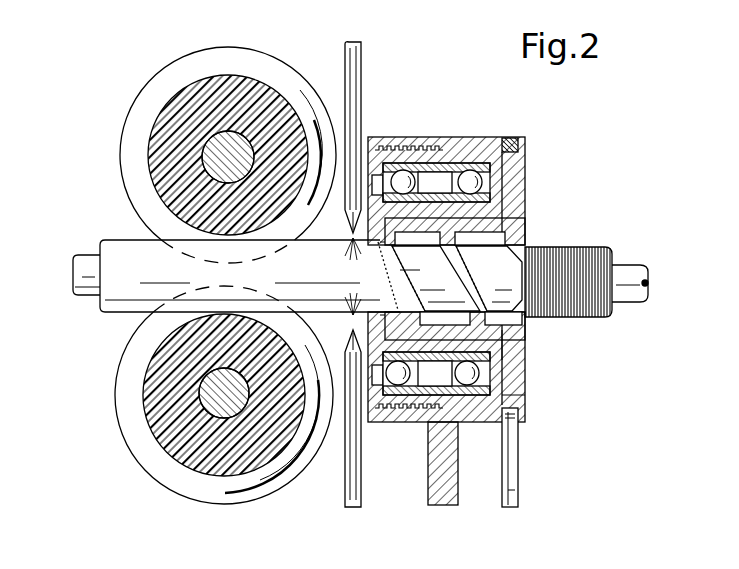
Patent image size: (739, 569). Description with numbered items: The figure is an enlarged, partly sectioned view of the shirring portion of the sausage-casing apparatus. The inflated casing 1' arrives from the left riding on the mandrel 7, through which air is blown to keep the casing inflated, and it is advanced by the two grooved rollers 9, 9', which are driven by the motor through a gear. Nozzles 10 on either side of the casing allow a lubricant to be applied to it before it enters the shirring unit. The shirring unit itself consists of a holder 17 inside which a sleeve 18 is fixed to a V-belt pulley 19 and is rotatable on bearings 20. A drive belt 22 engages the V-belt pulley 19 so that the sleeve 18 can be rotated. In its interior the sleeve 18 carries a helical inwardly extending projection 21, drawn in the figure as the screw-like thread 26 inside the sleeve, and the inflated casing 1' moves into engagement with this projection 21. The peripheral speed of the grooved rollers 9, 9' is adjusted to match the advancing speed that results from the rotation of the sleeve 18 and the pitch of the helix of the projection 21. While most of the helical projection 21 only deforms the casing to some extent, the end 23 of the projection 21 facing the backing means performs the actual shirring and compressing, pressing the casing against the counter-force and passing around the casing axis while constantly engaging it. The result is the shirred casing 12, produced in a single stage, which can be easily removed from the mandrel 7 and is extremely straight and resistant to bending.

The inflated casing 1' is at (237, 251).
The mandrel 7 is at (88, 284).
The grooved roller 9 is at (212, 395).
The grooved roller 9' is at (214, 155).
The nozzle 10 is at (361, 57).
The shirred casing 12 is at (604, 318).
The holder 17 is at (458, 137).
The sleeve 18 is at (527, 337).
The V-belt pulley 19 is at (527, 393).
The bearing 20 is at (500, 184).
The helical projection 21 is at (518, 247).
The drive belt 22 is at (518, 487).
The end of projection 23 is at (532, 249).
The screw thread 26 is at (462, 276).